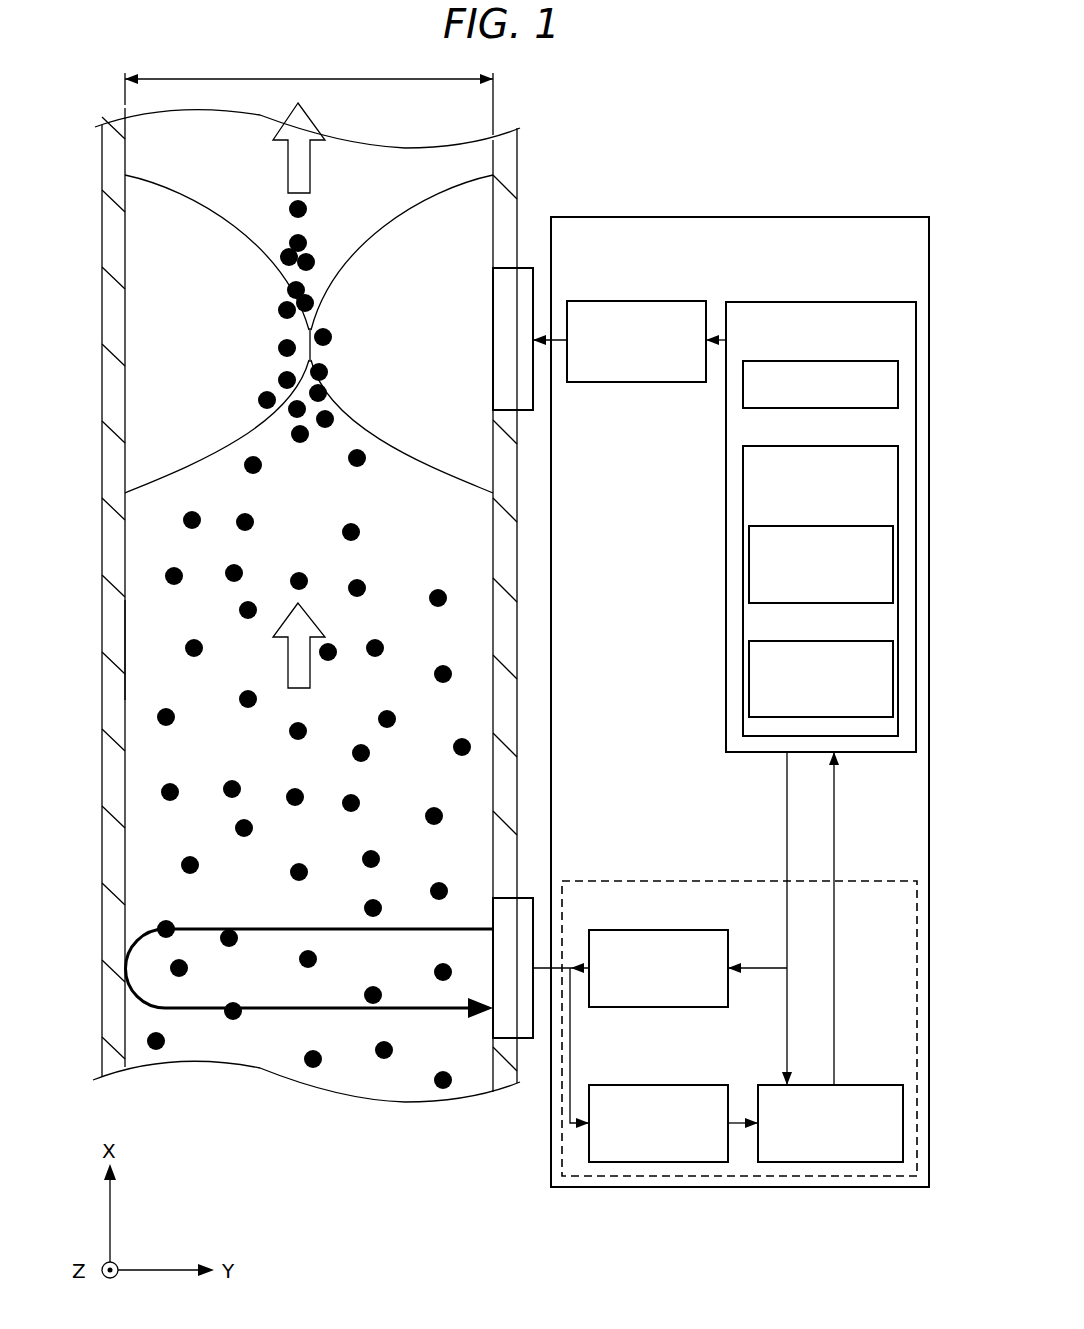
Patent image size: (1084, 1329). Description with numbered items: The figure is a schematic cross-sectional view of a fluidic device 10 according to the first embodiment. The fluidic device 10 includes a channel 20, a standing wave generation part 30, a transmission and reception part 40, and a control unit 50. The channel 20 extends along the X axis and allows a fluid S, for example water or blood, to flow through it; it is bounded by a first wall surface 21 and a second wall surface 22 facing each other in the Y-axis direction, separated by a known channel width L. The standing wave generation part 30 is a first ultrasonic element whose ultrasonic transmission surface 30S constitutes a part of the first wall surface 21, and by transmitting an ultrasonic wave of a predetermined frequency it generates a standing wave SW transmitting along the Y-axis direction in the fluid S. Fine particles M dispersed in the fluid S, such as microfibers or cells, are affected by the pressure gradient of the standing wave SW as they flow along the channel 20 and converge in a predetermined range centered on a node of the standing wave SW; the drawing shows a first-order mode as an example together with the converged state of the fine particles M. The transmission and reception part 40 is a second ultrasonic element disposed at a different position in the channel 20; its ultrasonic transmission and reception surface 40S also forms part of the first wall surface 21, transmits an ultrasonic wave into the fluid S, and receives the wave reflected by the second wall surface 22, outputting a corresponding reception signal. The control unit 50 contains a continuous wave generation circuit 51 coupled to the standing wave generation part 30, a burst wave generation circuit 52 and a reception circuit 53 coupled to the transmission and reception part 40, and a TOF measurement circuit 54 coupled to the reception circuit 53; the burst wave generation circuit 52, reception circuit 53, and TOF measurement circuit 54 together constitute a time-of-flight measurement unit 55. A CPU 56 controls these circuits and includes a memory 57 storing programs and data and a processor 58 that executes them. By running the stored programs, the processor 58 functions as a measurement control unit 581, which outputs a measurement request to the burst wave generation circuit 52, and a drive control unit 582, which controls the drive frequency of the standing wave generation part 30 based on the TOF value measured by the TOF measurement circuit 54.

The fluidic device 10 is at (582, 127).
The channel 20 is at (102, 203).
The first wall surface 21 is at (487, 610).
The second wall surface 22 is at (125, 657).
The standing wave generation part 30 is at (522, 268).
The ultrasonic transmission surface 30S is at (493, 300).
The transmission and reception part 40 is at (524, 1040).
The ultrasonic transmission and reception surface 40S is at (492, 1026).
The control unit 50 is at (877, 216).
The continuous wave generation circuit 51 is at (648, 301).
The burst wave generation circuit 52 is at (674, 930).
The reception circuit 53 is at (674, 1085).
The TOF measurement circuit 54 is at (852, 1085).
The time-of-flight measurement unit 55 is at (880, 881).
The central processing unit (CPU) 56 is at (858, 302).
The memory 57 is at (843, 361).
The processor 58 is at (843, 446).
The measurement control unit 581 is at (823, 526).
The drive control unit 582 is at (823, 641).
The fluid S is at (148, 548).
The fine particles M is at (162, 714).
The standing wave SW is at (433, 474).
The channel width L is at (309, 94).